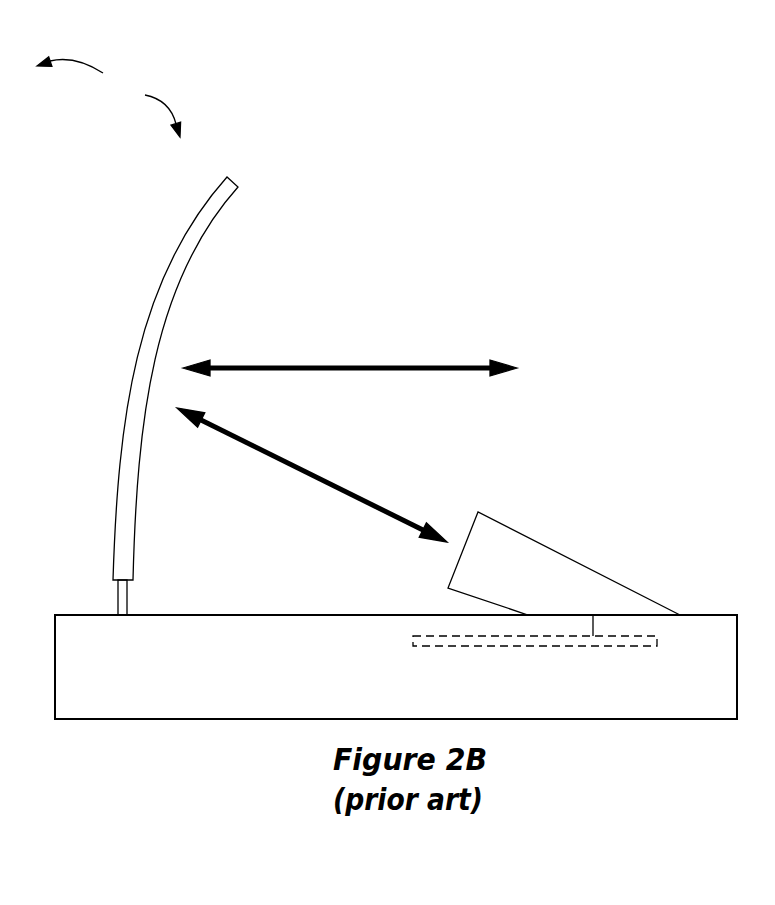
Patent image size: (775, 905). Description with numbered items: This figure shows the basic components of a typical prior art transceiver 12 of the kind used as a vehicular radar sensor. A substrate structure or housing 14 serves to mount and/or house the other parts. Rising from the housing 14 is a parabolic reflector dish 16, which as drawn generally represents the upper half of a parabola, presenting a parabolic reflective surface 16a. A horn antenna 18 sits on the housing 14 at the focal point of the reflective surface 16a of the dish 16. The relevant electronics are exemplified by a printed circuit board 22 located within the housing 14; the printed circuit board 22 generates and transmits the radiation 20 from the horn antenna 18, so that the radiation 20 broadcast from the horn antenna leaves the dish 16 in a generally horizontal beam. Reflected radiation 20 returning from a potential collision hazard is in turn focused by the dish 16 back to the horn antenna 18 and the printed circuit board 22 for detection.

The transceiver 12 is at (109, 97).
The substrate structure or housing 14 is at (285, 678).
The parabolic reflector dish 16 is at (170, 283).
The parabolic reflective surface 16a is at (152, 447).
The horn antenna 18 is at (538, 570).
The radiation 20 is at (378, 392).
The printed circuit board 22 is at (537, 647).